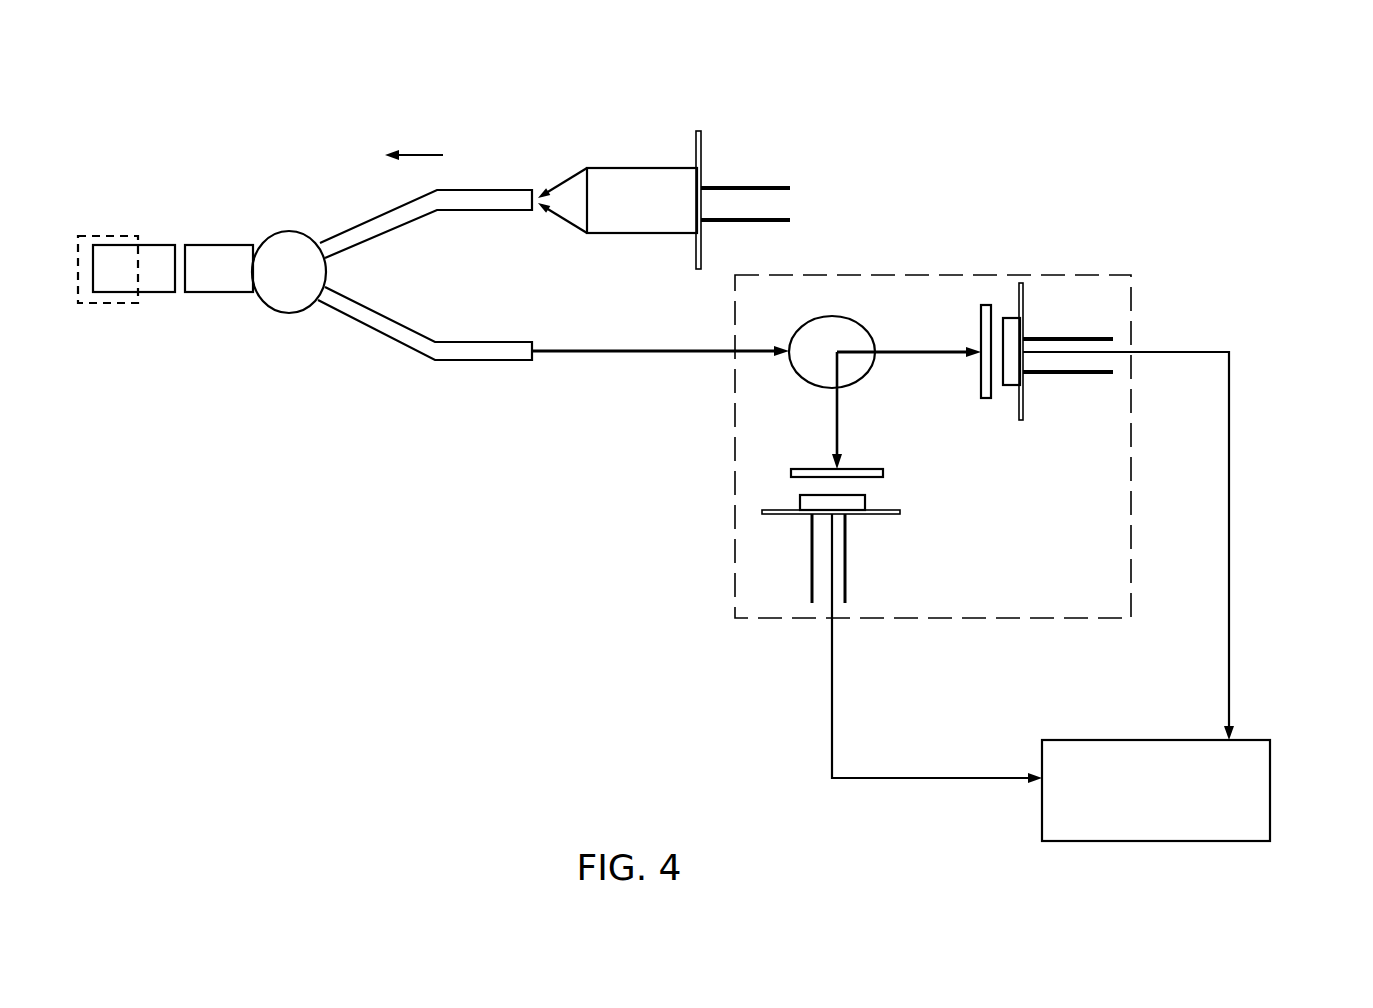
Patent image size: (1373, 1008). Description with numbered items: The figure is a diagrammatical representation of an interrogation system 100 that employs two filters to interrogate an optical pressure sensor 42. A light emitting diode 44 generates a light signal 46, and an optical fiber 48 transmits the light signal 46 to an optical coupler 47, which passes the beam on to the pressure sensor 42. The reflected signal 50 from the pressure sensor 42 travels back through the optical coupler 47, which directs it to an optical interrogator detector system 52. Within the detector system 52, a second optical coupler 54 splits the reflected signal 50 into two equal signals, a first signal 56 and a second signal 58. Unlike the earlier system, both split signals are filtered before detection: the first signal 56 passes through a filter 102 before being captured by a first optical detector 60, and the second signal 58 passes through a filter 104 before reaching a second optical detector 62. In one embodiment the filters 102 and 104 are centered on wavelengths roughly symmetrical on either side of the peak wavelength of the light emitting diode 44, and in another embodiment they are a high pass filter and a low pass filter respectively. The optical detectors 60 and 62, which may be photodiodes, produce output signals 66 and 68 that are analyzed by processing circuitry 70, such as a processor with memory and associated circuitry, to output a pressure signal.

The pressure sensor 42 is at (110, 236).
The light emitting diode 44 is at (640, 168).
The light signal 46 is at (420, 152).
The optical coupler 47 is at (283, 240).
The optical fiber 48 is at (370, 218).
The reflected signal 50 is at (585, 348).
The optical interrogator detector system 52 is at (900, 275).
The optical coupler 54 is at (805, 332).
The first signal 56 is at (942, 350).
The second signal 58 is at (841, 418).
The first optical detector 60 is at (1083, 339).
The second optical detector 62 is at (847, 576).
The output signal 66 is at (1197, 352).
The output signal 68 is at (835, 692).
The processing circuitry 70 is at (1155, 740).
The interrogation system 100 is at (1256, 122).
The filter 102 is at (985, 305).
The filter 104 is at (885, 472).